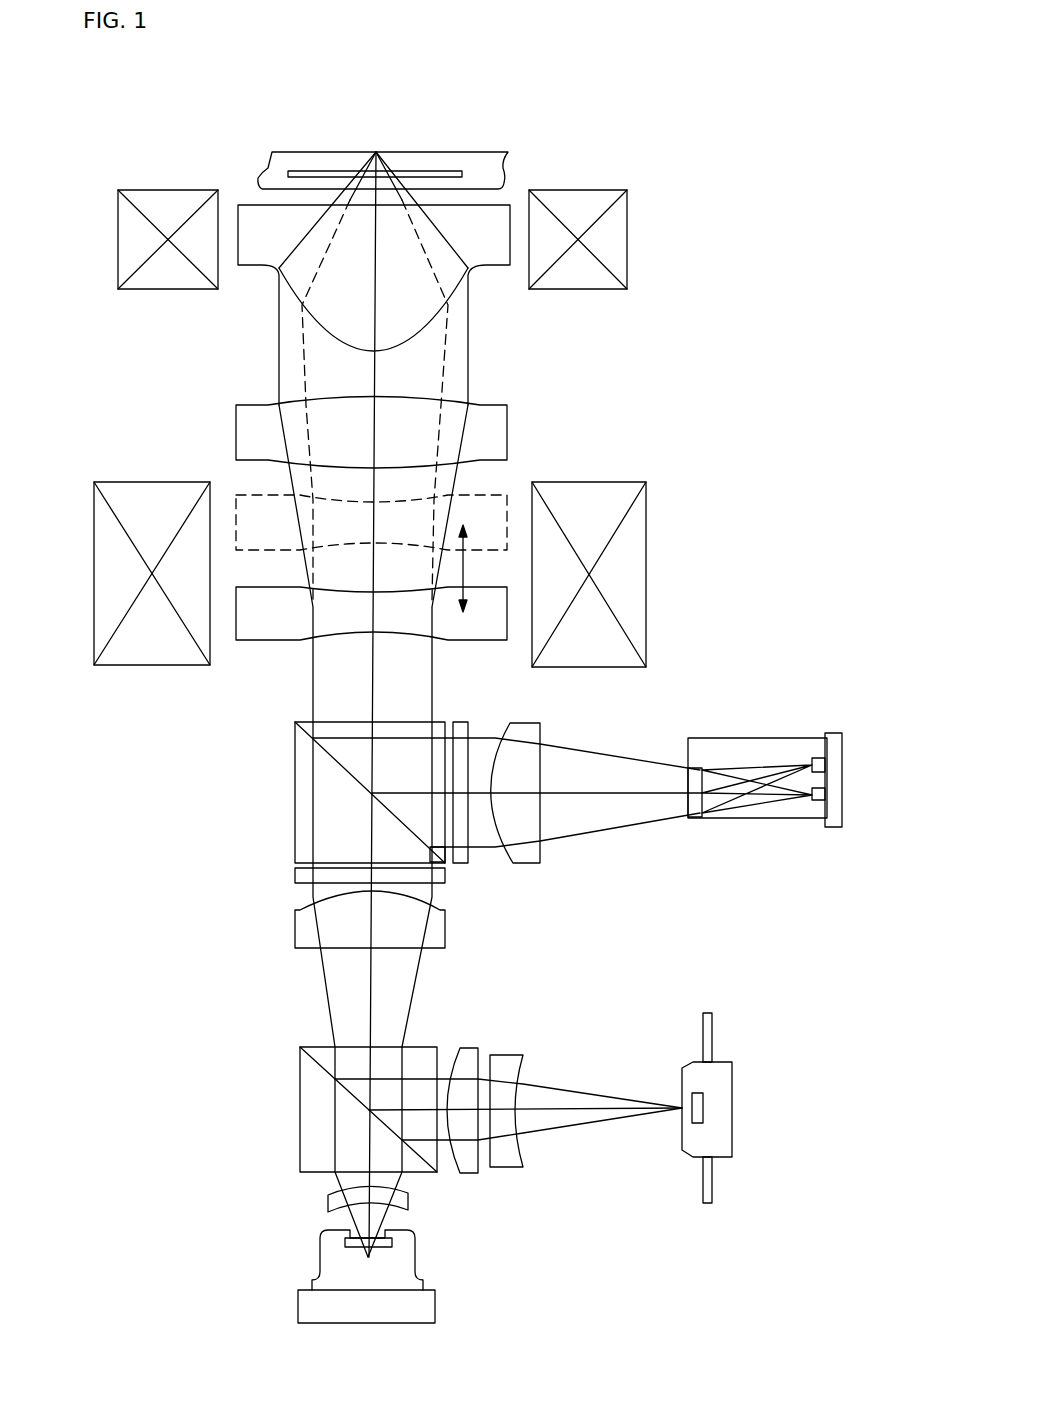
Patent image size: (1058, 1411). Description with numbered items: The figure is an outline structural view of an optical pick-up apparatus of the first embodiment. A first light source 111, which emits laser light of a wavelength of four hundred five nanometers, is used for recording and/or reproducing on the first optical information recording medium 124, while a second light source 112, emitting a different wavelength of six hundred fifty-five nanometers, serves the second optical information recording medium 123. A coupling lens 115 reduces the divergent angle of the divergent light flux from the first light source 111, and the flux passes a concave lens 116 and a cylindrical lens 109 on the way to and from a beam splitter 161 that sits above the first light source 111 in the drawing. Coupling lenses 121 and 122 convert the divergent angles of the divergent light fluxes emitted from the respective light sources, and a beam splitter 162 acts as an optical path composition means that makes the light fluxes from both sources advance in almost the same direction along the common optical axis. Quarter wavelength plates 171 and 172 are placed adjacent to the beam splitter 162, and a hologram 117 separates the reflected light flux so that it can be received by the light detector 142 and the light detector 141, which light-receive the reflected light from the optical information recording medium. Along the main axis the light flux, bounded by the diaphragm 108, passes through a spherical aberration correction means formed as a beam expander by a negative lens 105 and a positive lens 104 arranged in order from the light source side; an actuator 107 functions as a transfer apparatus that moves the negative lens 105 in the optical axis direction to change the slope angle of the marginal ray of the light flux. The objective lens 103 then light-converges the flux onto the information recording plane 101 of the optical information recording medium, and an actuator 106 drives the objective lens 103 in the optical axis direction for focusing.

The information recording plane 101 is at (421, 153).
The objective lens 103 is at (257, 215).
The positive lens 104 is at (507, 425).
The negative lens 105 is at (507, 612).
The actuator 106 is at (168, 190).
The actuator 107 is at (94, 568).
The diaphragm 108 is at (258, 304).
The cylindrical lens 109 is at (470, 1048).
The first light source 111 is at (298, 1305).
The second light source 112 is at (842, 793).
The coupling lens 115 is at (328, 1203).
The concave lens 116 is at (507, 1055).
The hologram 117 is at (692, 818).
The coupling lens 121 is at (295, 930).
The coupling lens 122 is at (540, 726).
The second optical information recording medium 123 is at (450, 160).
The first optical information recording medium 124 is at (325, 171).
The light detector 141 is at (732, 1107).
The light detector 142 is at (842, 763).
The beam splitter 161 is at (300, 1110).
The beam splitter 162 is at (295, 793).
The ¼ wavelength plate 171 is at (295, 877).
The ¼ wavelength plate 172 is at (460, 863).